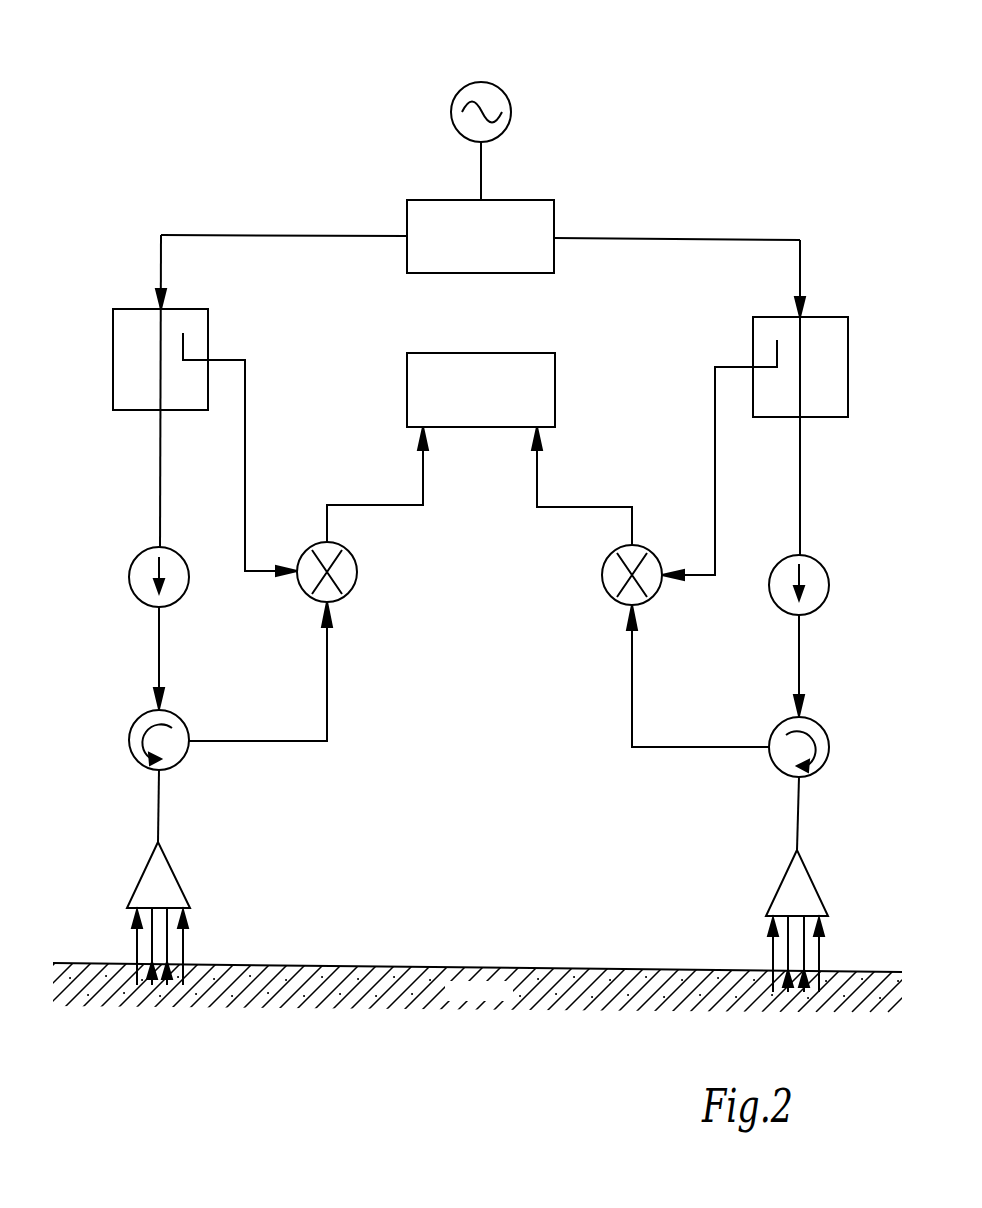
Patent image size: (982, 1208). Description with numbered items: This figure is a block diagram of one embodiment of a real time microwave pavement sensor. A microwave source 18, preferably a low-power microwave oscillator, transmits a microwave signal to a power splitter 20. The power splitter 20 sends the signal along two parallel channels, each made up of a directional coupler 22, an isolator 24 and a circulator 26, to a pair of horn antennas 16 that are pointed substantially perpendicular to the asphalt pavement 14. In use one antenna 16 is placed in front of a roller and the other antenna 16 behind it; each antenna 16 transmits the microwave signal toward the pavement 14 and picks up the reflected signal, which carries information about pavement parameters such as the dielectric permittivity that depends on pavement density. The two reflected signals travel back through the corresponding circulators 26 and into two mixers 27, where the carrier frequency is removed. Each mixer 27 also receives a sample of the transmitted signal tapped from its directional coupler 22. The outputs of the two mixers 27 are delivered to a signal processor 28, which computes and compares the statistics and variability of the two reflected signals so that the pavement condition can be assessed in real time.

The asphalt pavement 14 is at (422, 972).
The horn antenna 16 is at (157, 865).
The microwave source 18 is at (507, 130).
The power splitter 20 is at (540, 208).
The directional coupler 22 is at (135, 308).
The isolator 24 is at (172, 550).
The circulator 26 is at (172, 713).
The mixer 27 is at (347, 546).
The signal processor 28 is at (480, 357).